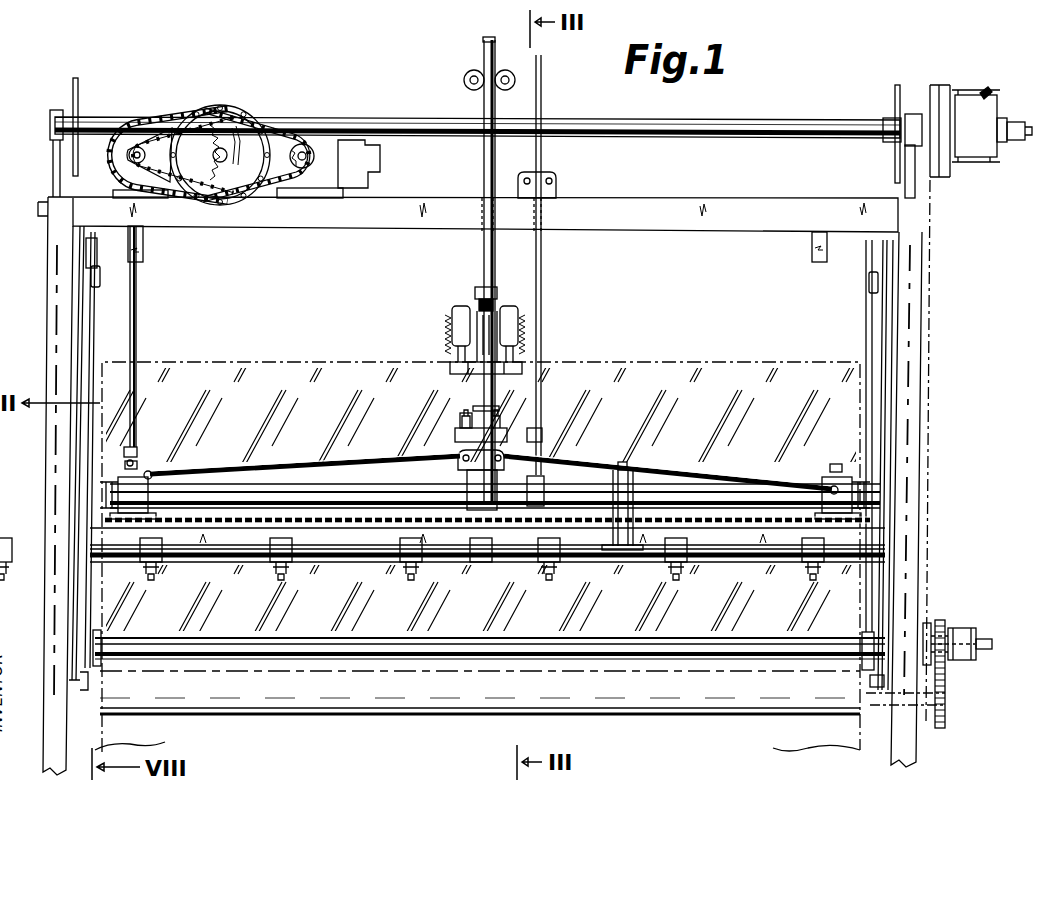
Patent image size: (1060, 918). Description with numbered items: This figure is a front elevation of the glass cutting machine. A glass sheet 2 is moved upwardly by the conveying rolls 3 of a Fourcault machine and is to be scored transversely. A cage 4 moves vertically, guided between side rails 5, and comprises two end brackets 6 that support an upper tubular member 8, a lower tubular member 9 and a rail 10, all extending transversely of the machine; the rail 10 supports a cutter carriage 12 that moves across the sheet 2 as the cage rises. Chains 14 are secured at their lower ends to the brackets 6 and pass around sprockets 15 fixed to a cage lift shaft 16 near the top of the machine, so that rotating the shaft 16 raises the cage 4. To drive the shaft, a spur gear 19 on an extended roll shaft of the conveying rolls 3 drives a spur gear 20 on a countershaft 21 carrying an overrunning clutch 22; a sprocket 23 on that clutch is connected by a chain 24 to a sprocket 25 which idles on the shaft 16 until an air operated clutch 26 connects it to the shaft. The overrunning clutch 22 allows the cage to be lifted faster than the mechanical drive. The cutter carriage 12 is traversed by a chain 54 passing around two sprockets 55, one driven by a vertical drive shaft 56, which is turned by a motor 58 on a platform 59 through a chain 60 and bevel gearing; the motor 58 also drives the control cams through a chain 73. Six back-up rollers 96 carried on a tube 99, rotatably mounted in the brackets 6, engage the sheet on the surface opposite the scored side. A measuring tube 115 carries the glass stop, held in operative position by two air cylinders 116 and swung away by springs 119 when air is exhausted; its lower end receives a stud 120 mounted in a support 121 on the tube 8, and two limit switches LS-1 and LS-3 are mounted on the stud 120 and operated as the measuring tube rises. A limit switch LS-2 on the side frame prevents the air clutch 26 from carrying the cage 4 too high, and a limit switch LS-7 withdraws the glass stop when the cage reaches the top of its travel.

The glass sheet 2 is at (285, 373).
The conveying rolls 3 is at (690, 716).
The cage 4 is at (738, 650).
The side rails 5 is at (52, 318).
The end brackets 6 is at (80, 604).
The upper tubular member 8 is at (690, 484).
The lower tubular member 9 is at (660, 650).
The rail 10 is at (740, 542).
The cutter carriage 12 is at (650, 550).
The chains 14 is at (80, 186).
The sprockets 15 is at (79, 98).
The cage lift shaft 16 is at (782, 126).
The spur gear 19 is at (946, 714).
The spur gear 20 is at (948, 622).
The countershaft 21 is at (993, 644).
The overrunning clutch 22 is at (970, 630).
The sprocket 23 is at (930, 626).
The chain 24 is at (933, 290).
The sprocket 25 is at (933, 90).
The air operated clutch 26 is at (980, 113).
The chain 54 is at (378, 498).
The sprockets 55 is at (150, 505).
The drive shaft 56 is at (138, 331).
The motor 58 is at (345, 179).
The platform 59 is at (400, 224).
The chain 60 is at (146, 121).
The chain 73 is at (236, 108).
The back-up rollers 96 is at (410, 574).
The tube 99 is at (336, 562).
The measuring tube 115 is at (485, 262).
The air cylinders 116 is at (460, 311).
The springs 119 is at (447, 341).
The stud 120 is at (482, 443).
The support 121 is at (470, 478).
The limit switch LS-1 is at (466, 432).
The limit switch LS-2 is at (100, 279).
The limit switch LS-3 is at (538, 428).
The limit switch LS-7 is at (870, 284).